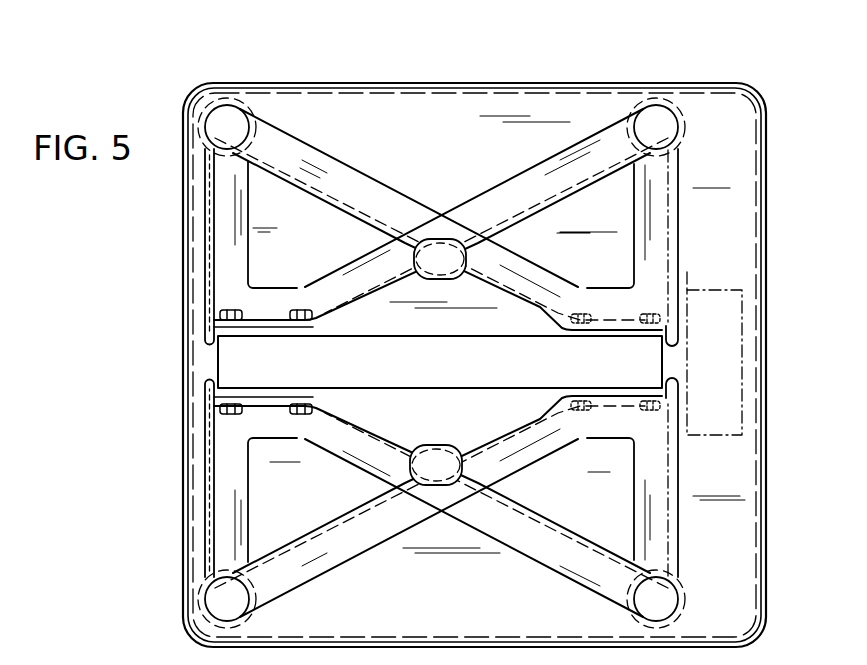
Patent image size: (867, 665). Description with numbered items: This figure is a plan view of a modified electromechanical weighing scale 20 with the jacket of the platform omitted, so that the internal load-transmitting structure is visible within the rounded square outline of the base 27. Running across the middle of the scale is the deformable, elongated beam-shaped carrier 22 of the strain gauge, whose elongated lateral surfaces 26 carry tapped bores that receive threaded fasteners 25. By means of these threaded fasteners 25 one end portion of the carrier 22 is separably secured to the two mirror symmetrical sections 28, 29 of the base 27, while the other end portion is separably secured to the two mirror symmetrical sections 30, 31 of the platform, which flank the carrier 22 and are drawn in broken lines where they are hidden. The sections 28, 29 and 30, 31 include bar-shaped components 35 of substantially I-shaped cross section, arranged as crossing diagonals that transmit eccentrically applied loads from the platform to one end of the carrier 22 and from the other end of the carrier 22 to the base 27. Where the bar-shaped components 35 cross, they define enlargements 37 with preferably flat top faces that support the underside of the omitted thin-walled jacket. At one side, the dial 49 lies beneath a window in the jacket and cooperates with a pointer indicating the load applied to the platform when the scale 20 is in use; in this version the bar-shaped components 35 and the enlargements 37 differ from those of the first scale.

The weighing scale 20 is at (532, 62).
The carrier 22 is at (445, 378).
The threaded fasteners 25 is at (298, 309).
The lateral surfaces 26 is at (337, 335).
The base 27 is at (713, 126).
The section of the base 28 is at (258, 307).
The section of the base 29 is at (272, 417).
The section of the platform 30 is at (628, 313).
The section of the platform 31 is at (622, 423).
The bar-shaped components 35 is at (373, 196).
The enlargements 37 is at (440, 262).
The dial 49 is at (740, 356).